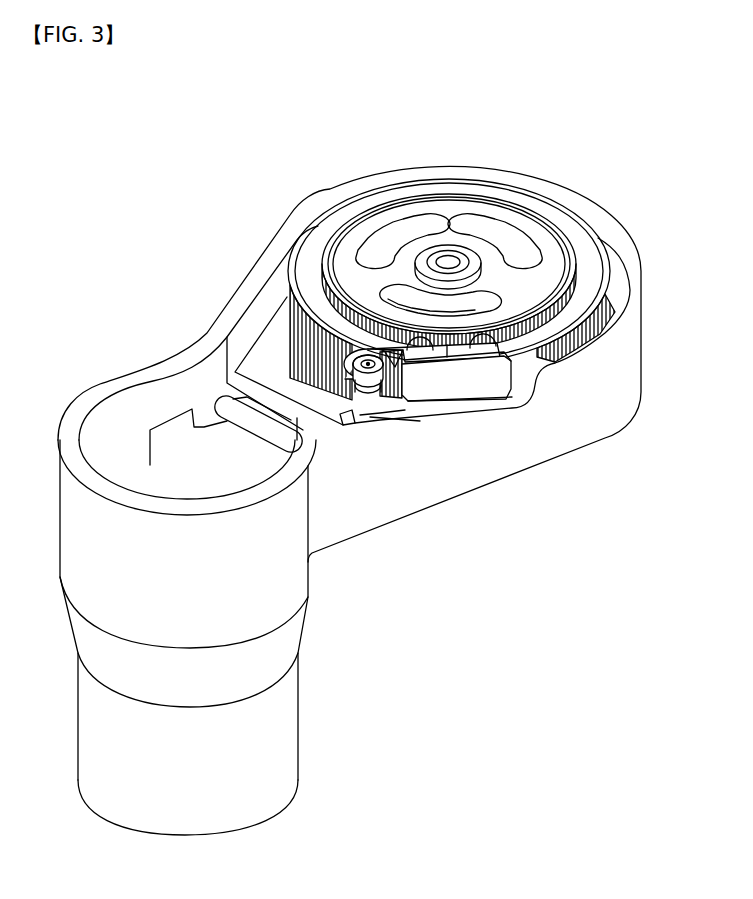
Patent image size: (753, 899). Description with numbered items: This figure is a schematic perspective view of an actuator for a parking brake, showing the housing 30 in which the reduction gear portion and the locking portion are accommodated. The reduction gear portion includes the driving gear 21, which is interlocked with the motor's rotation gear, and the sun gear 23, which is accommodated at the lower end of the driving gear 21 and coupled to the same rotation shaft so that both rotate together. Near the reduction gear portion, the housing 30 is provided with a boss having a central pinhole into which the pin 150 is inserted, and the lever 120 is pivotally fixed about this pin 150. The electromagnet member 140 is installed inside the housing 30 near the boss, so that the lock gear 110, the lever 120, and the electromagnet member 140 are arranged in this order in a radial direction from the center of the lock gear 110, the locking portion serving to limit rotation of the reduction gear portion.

The driving gear 21 is at (598, 254).
The sun gear 23 is at (467, 255).
The housing 30 is at (293, 695).
The lock gear 110 is at (452, 207).
The lever 120 is at (398, 368).
The electromagnet member 140 is at (487, 370).
The pin 150 is at (368, 367).